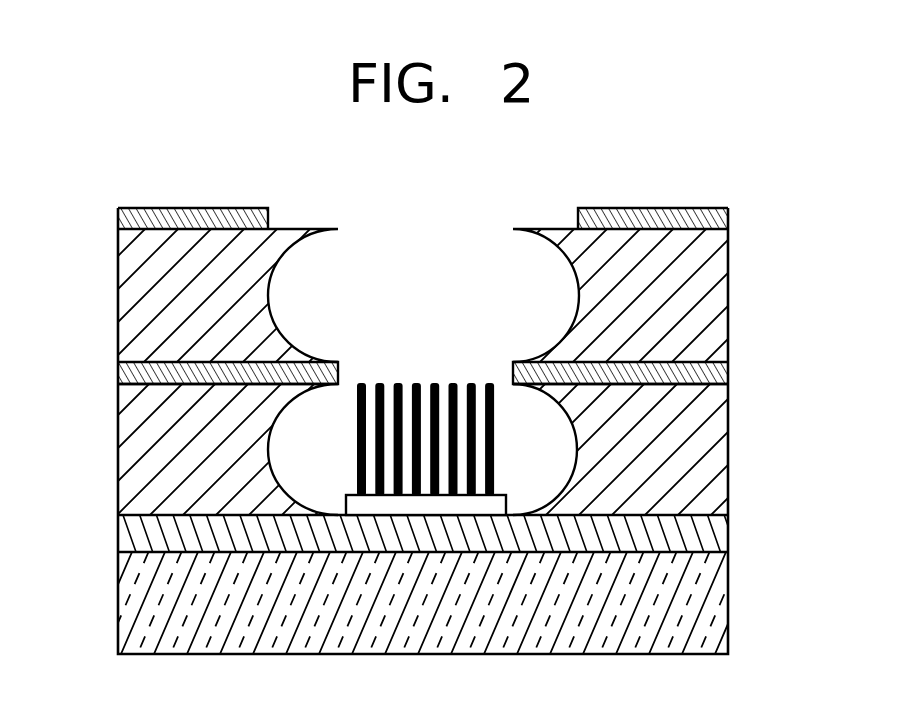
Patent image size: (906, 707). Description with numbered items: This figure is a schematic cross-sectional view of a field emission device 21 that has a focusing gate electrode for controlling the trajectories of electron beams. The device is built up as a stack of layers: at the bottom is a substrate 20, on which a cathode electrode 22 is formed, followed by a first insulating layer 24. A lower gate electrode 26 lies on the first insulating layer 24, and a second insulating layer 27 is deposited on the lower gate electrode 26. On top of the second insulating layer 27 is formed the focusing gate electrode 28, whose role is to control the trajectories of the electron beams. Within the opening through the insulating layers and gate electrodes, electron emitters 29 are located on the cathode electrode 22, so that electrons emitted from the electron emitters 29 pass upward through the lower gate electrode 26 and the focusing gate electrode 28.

The substrate 20 is at (717, 606).
The field emission device 21 is at (108, 134).
The cathode electrode 22 is at (717, 538).
The first insulating layer 24 is at (132, 454).
The lower gate electrode 26 is at (130, 373).
The second insulating layer 27 is at (132, 297).
The focusing gate electrode 28 is at (118, 215).
The electron emitters 29 is at (408, 398).